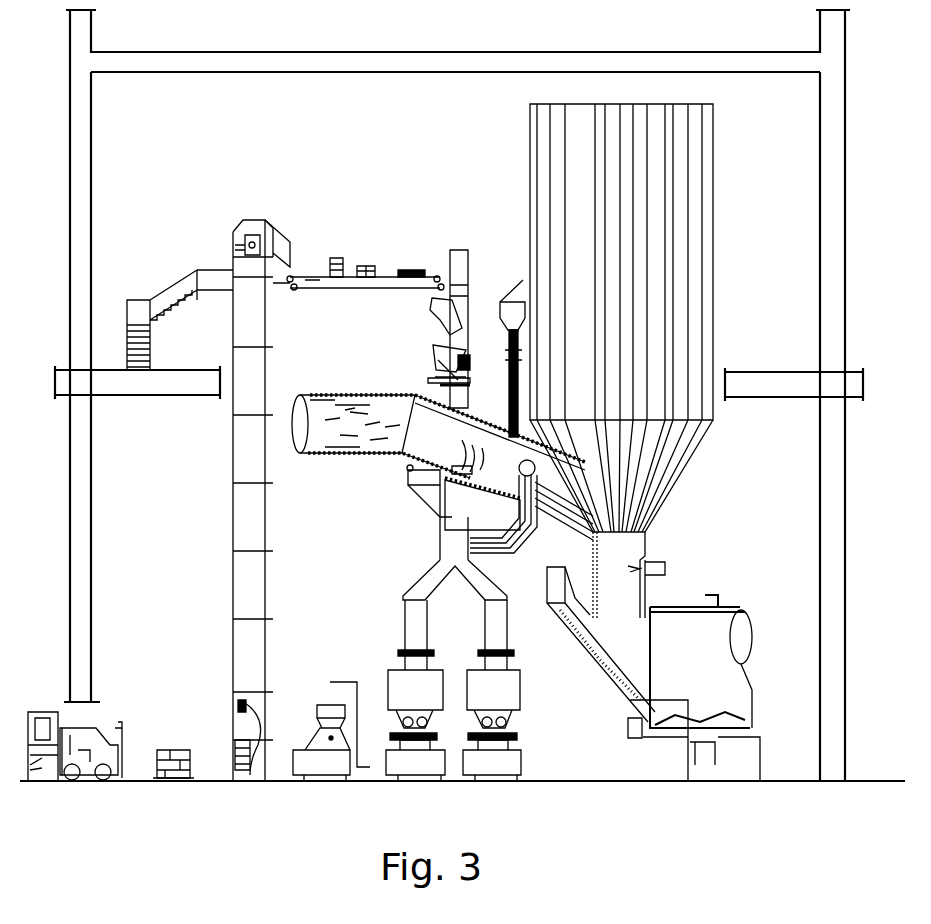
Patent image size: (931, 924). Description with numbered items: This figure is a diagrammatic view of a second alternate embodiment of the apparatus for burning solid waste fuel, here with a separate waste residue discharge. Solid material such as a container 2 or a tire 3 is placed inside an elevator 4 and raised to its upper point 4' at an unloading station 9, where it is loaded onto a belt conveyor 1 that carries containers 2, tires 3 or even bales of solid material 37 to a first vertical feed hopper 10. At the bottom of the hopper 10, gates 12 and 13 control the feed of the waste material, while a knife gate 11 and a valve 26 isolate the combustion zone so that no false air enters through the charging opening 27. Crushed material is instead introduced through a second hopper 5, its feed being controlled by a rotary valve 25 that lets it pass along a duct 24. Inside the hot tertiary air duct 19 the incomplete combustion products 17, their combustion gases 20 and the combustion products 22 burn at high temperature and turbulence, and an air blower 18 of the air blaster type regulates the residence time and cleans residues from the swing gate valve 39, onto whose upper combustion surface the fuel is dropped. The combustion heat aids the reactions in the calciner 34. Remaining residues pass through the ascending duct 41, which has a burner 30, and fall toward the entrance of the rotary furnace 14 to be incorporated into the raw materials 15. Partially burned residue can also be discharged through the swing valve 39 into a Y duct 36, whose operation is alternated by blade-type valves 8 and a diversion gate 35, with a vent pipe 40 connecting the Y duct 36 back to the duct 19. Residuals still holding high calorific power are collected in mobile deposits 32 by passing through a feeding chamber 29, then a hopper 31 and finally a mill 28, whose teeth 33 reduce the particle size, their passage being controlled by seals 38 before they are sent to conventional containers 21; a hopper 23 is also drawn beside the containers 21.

The belt conveyor 1 is at (310, 290).
The container 2 is at (233, 742).
The tire 3 is at (238, 702).
The elevator 4 is at (239, 500).
The point of elevator 4' is at (262, 185).
The second hopper 5 is at (505, 303).
The valves 8 is at (478, 652).
The unloading station 9 is at (288, 256).
The first vertical feed hopper 10 is at (457, 252).
The knife gate 11 is at (436, 380).
The gate 12 is at (440, 320).
The gate 13 is at (440, 350).
The rotary furnace 14 is at (684, 605).
The raw materials 15 is at (573, 600).
The incomplete combustion products 17 is at (462, 458).
The air blower 18 is at (510, 500).
The tertiary air duct 19 is at (568, 518).
The combustion gases 20 is at (518, 468).
The conventional containers 21 is at (300, 753).
The combustion products 22 is at (452, 466).
The hopper 23 is at (320, 722).
The duct 24 is at (509, 385).
The rotary valve 25 is at (509, 355).
The valve 26 is at (445, 375).
The charging opening 27 is at (472, 415).
The mill 28 is at (478, 722).
The feeding chamber 29 is at (470, 678).
The burner 30 is at (665, 566).
The hopper 31 is at (512, 714).
The mobile deposits 32 is at (521, 775).
The teeth 33 is at (506, 726).
The calciner 34 is at (717, 104).
The diversion gate 35 is at (450, 560).
The Y duct 36 is at (505, 595).
The bales of solid material 37 is at (370, 266).
The seals 38 is at (516, 742).
The swing gate valve 39 is at (420, 500).
The vent pipe 40 is at (528, 535).
The ascending duct 41 is at (591, 552).